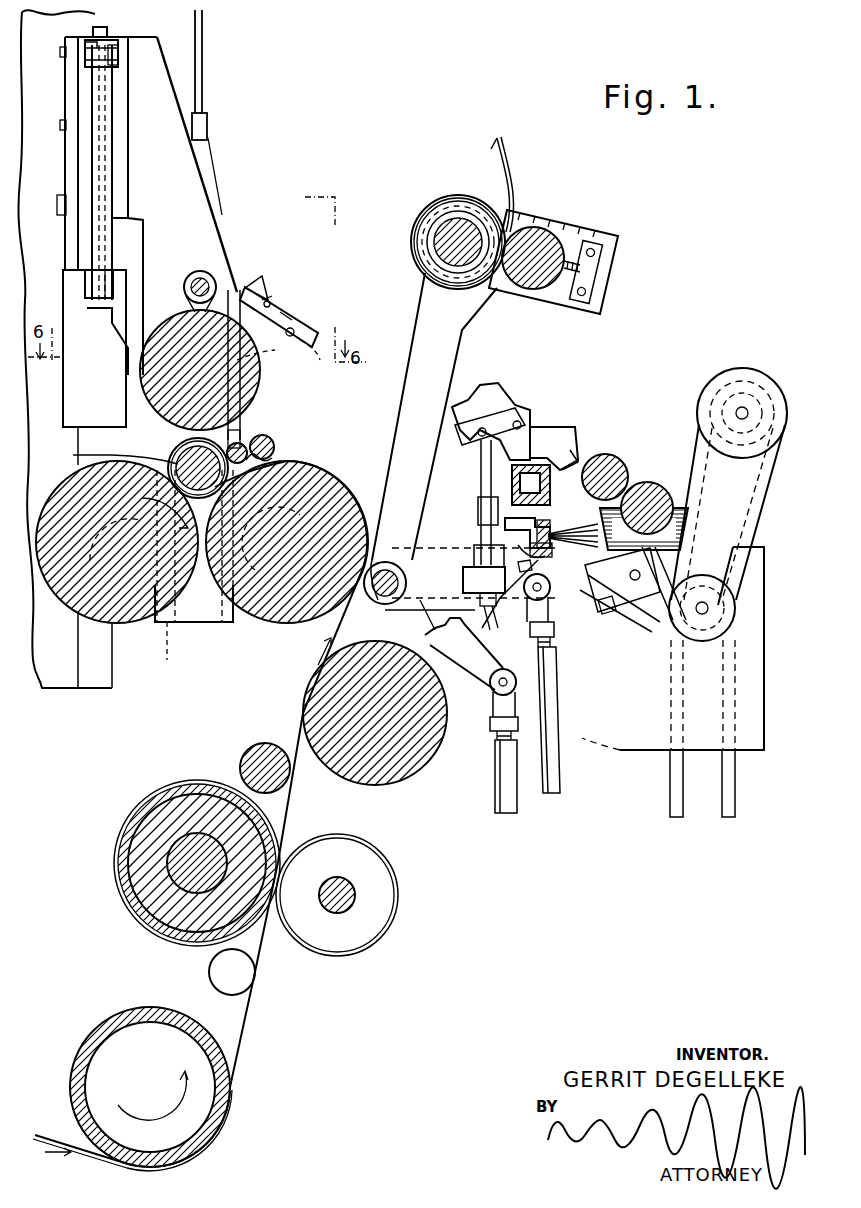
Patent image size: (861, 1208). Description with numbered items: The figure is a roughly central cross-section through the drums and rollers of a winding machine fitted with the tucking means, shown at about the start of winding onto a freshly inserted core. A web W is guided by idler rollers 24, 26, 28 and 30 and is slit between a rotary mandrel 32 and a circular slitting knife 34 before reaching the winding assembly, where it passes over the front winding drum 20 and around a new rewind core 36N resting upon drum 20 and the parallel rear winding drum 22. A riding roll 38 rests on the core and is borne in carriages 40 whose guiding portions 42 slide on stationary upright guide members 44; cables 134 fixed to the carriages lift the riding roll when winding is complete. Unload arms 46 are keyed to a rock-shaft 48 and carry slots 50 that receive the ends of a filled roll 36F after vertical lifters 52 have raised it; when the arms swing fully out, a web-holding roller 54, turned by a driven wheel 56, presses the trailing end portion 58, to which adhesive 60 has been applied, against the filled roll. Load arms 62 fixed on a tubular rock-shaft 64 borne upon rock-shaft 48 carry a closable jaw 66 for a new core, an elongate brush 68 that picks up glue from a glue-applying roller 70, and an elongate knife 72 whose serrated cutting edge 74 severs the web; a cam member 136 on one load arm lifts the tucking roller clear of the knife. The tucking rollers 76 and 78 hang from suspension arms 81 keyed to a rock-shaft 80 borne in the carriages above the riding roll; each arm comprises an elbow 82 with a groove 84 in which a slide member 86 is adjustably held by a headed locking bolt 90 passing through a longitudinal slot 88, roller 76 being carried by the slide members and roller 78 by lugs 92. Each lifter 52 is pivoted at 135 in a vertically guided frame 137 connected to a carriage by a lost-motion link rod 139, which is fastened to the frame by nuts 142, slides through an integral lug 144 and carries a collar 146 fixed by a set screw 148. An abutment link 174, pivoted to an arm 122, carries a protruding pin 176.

The front winding drum 20 is at (270, 618).
The rear winding drum 22 is at (122, 615).
The guide roller 24 is at (102, 1058).
The guide roller 26 is at (208, 972).
The guide roller 28 is at (250, 752).
The guide roller 30 is at (402, 765).
The rotary mandrel 32 is at (147, 877).
The circular rotary slitting knife 34 is at (377, 905).
The new rewind core 36N is at (107, 457).
The filled rewind roll 36F is at (430, 202).
The riding roll 38 is at (180, 342).
The carriage 40 is at (198, 213).
The guiding portion 42 is at (127, 73).
The upright guide member 44 is at (80, 25).
The unload arm 46 is at (445, 356).
The rock-shaft 48 is at (368, 605).
The slot 50 is at (487, 197).
The vertical lifter 52 is at (200, 600).
The web-holding roller 54 is at (553, 233).
The driven wheel 56 is at (762, 368).
The trailing end portion 58 is at (510, 190).
The adhesive 60 is at (501, 172).
The load arm 62 is at (536, 562).
The tubular rock-shaft 64 is at (415, 563).
The closable jaw 66 is at (490, 400).
The elongate brush 68 is at (572, 540).
The glue-applying roller 70 is at (620, 463).
The elongate knife 72 is at (548, 462).
The cutting edge 74 is at (580, 453).
The tucking roller 76 is at (243, 444).
The tucking roller 78 is at (275, 445).
The rock-shaft 80 is at (212, 272).
The suspension arm 81 is at (240, 286).
The elbow 82 is at (296, 323).
The groove 84 is at (263, 275).
The slide member 86 is at (206, 432).
The longitudinal slot 88 is at (275, 352).
The headed locking bolt 90 is at (316, 362).
The lug 92 is at (256, 452).
The arm 122 is at (288, 316).
The cable 134 is at (204, 55).
The pivot 135 is at (170, 650).
The cam member 136 is at (567, 433).
The vertically guided frame 137 is at (78, 390).
The lost-motion link rod 139 is at (100, 118).
The nut 142 is at (113, 280).
The lug 144 is at (113, 70).
The collar 146 is at (110, 42).
The set screw 148 is at (85, 47).
The abutment link 174 is at (276, 292).
The pin 176 is at (280, 300).
The web W is at (293, 462).